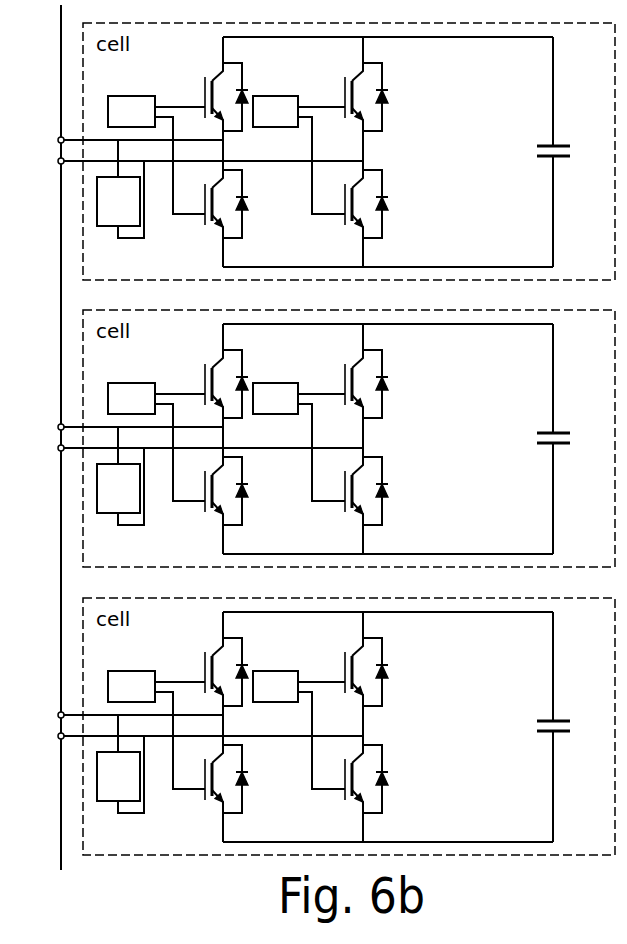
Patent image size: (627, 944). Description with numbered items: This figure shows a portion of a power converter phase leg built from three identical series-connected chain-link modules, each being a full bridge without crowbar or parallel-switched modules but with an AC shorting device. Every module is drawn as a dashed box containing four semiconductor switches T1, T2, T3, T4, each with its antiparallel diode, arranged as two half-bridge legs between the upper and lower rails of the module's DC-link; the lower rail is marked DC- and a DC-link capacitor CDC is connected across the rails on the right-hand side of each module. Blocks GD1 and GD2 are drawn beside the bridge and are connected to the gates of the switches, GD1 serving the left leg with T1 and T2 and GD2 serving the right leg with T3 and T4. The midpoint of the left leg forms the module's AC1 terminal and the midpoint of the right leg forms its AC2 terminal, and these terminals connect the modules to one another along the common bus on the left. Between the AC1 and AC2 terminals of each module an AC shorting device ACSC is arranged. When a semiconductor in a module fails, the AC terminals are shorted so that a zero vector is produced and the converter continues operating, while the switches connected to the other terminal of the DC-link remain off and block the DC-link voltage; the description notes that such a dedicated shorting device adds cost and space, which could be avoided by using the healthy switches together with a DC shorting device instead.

The IGBT transistor T1 with antiparallel diode T1 is at (226, 384).
The IGBT transistor T2 with antiparallel diode T2 is at (226, 491).
The IGBT transistor T3 with antiparallel diode T3 is at (366, 384).
The IGBT transistor T4 with antiparallel diode T4 is at (366, 491).
The gate driver 1 GD1 is at (156, 442).
The gate driver 2 GD2 is at (299, 442).
The AC shorting device ACSC is at (120, 476).
The AC1 terminal AC1 is at (117, 427).
The AC2 terminal AC2 is at (187, 448).
The DC link capacitor CDC is at (575, 439).
The negative DC terminal DC- is at (522, 538).